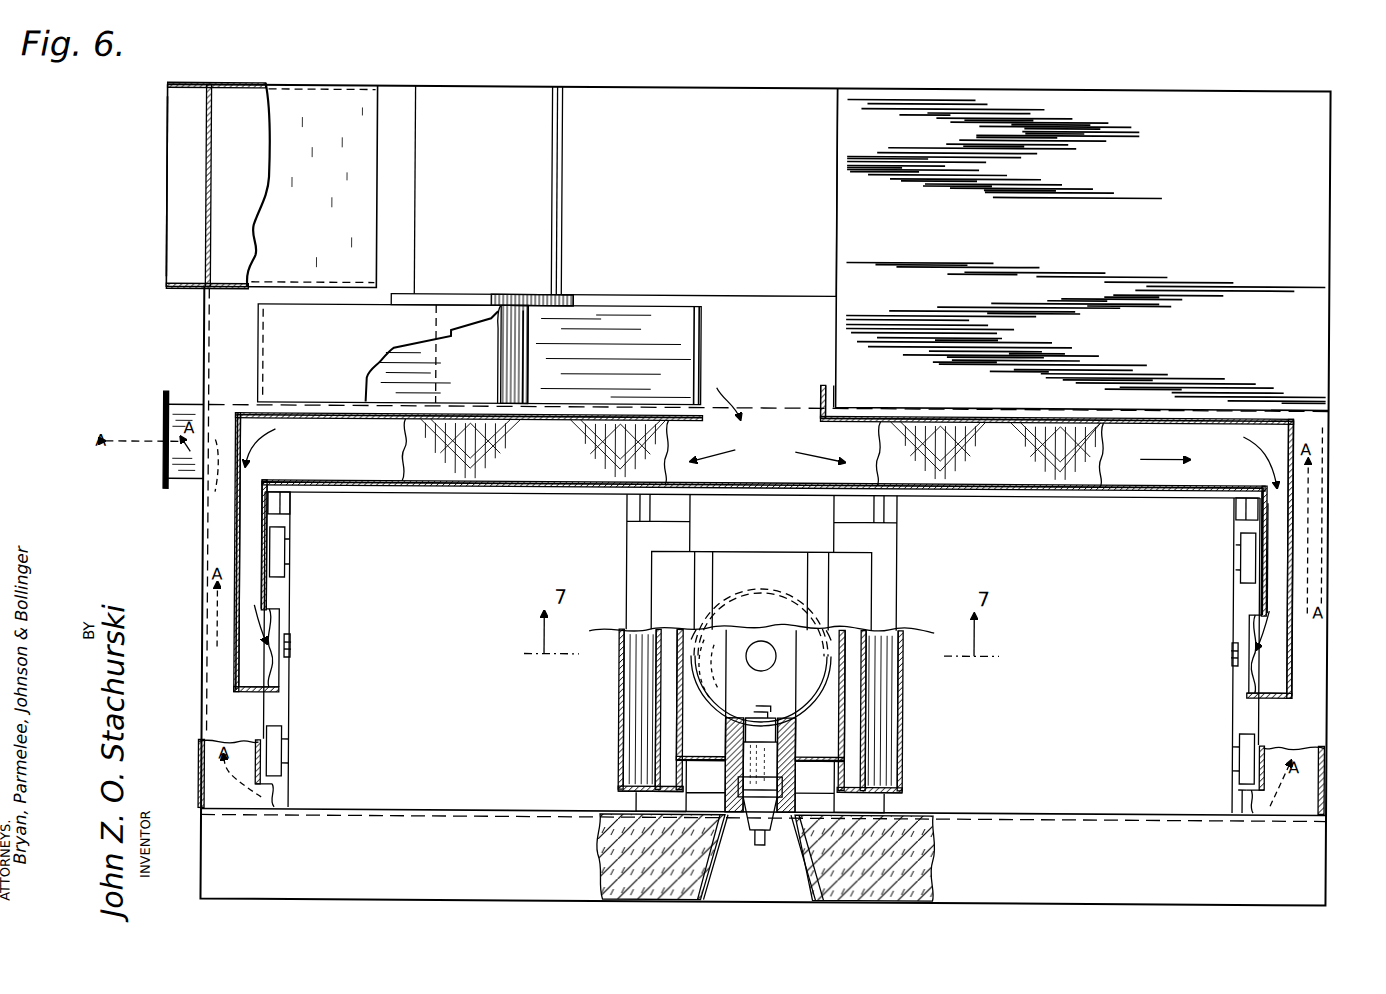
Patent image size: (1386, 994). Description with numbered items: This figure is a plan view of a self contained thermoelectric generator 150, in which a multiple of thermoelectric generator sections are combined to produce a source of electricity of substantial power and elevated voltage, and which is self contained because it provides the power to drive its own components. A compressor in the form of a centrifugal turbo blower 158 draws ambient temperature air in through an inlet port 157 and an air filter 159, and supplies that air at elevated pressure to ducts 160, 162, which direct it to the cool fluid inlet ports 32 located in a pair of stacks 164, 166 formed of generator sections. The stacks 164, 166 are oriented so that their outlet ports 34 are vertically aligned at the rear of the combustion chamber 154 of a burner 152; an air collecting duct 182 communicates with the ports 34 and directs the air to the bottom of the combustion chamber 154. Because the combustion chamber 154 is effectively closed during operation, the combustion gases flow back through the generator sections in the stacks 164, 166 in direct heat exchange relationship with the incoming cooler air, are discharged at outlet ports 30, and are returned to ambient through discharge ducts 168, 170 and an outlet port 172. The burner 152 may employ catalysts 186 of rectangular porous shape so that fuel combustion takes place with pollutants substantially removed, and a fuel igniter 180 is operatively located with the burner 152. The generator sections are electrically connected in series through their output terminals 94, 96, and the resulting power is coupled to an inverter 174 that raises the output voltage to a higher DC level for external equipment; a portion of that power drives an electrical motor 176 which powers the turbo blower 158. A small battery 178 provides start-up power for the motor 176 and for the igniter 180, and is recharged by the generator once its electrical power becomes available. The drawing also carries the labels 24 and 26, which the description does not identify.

The air flow path 24 is at (142, 440).
The air flow arrows 26 is at (392, 212).
The outlet ports 30 is at (1232, 810).
The cool fluid inlet ports 32 is at (292, 650).
The outlet ports 34 is at (645, 512).
The output terminal 94 is at (285, 752).
The output terminal 96 is at (286, 552).
The self contained thermoelectric generator 150 is at (110, 295).
The burner 152 is at (812, 695).
The combustion chamber 154 is at (730, 744).
The inlet port 157 is at (165, 196).
The centrifugal turbo blower 158 is at (642, 312).
The air filter 159 is at (238, 105).
The duct 160 is at (395, 490).
The duct 162 is at (1130, 495).
The stack 164 is at (450, 815).
The stack 166 is at (1125, 815).
The discharge duct 168 is at (205, 788).
The discharge duct 170 is at (1328, 770).
The outlet port 172 is at (163, 468).
The inverter 174 is at (1108, 92).
The electrical motor 176 is at (530, 213).
The battery 178 is at (775, 96).
The fuel igniter 180 is at (770, 830).
The air collecting duct 182 is at (782, 545).
The catalysts 186 is at (650, 735).